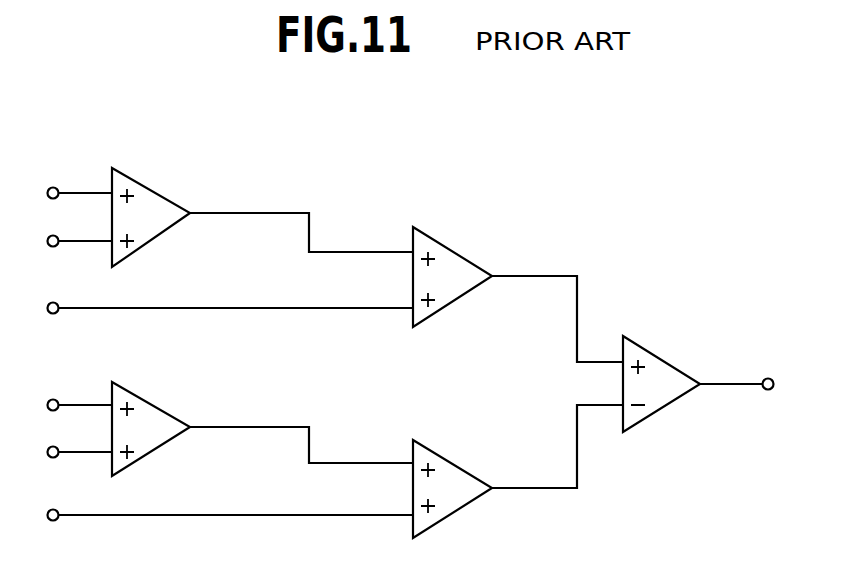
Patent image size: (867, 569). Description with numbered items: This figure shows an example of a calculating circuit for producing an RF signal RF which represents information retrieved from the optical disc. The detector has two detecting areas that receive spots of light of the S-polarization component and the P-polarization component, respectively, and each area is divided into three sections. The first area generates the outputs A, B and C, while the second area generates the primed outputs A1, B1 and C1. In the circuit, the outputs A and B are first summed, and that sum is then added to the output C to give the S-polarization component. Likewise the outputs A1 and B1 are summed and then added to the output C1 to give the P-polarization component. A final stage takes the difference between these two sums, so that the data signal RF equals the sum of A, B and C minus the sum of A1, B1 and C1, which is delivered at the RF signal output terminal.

The output A is at (68, 194).
The output B is at (68, 242).
The output C is at (218, 309).
The output A' A1 is at (59, 406).
The output B' B1 is at (61, 453).
The output C' C1 is at (211, 516).
The RF signal RF is at (771, 366).